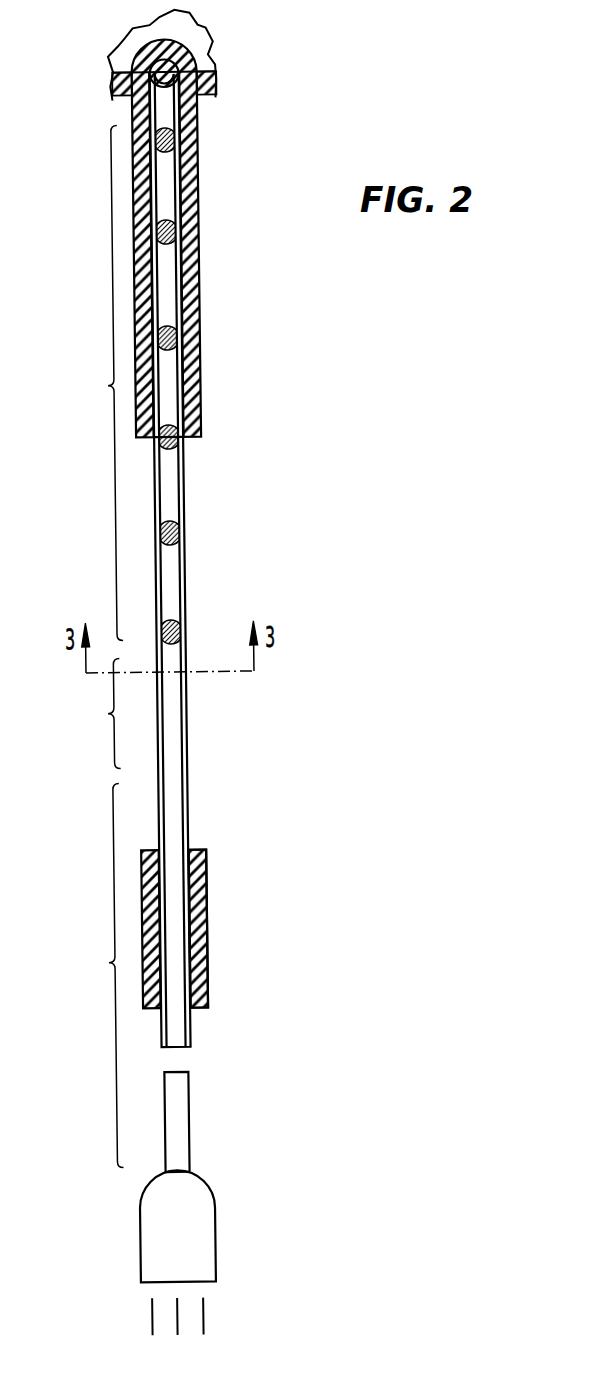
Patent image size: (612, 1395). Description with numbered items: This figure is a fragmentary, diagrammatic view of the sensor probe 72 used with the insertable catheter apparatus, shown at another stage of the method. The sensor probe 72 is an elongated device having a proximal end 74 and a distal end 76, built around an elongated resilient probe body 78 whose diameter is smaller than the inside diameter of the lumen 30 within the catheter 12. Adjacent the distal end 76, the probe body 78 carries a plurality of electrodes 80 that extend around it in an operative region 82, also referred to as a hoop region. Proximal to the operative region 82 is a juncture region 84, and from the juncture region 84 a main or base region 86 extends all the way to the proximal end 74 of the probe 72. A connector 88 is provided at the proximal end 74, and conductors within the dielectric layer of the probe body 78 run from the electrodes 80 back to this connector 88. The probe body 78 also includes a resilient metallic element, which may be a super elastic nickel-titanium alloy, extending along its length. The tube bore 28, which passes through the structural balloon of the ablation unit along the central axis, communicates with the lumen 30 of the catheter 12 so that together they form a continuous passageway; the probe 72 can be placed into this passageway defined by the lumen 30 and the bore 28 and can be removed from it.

The catheter 12 is at (194, 947).
The tube bore 28 is at (192, 405).
The lumen 30 is at (180, 913).
The sensor probe 72 is at (224, 586).
The proximal end 74 is at (175, 1142).
The distal end 76 is at (203, 55).
The resilient probe body 78 is at (177, 822).
The electrodes 80 is at (176, 148).
The operative region 82 is at (96, 384).
The juncture region 84 is at (99, 714).
The base region 86 is at (101, 976).
The connector 88 is at (126, 1237).